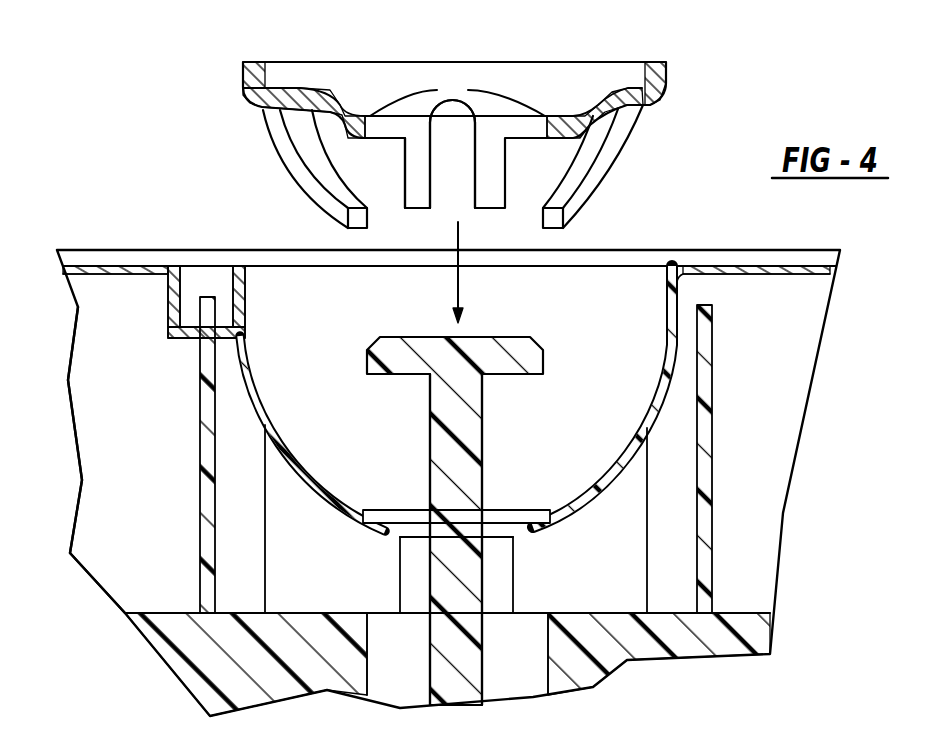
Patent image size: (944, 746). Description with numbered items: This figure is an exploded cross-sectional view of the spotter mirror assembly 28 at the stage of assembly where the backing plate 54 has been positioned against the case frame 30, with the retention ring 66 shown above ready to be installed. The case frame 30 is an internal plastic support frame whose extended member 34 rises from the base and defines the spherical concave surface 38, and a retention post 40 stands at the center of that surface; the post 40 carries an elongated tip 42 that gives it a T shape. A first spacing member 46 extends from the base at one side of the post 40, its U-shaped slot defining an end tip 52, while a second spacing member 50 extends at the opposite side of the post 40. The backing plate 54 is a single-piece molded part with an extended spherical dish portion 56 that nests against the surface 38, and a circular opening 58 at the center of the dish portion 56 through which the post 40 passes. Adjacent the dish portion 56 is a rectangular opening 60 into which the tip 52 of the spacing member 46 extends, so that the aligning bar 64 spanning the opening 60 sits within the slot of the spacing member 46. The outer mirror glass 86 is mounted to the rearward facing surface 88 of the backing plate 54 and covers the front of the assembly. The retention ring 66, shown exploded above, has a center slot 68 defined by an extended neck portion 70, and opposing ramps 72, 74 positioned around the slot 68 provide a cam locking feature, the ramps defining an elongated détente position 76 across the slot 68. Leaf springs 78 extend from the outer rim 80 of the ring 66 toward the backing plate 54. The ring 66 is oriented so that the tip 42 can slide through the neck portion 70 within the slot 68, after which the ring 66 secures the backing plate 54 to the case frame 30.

The spotter mirror assembly 28 is at (690, 45).
The case frame 30 is at (695, 665).
The extended member 34 is at (350, 577).
The spherical concave surface 38 is at (318, 490).
The retention post 40 is at (486, 485).
The elongated tip 42 is at (517, 347).
The first spacing member 46 is at (203, 542).
The second spacing member 50 is at (707, 480).
The end tip 52 is at (210, 303).
The backing plate 54 is at (788, 280).
The spherical dish portion 56 is at (607, 465).
The circular opening 58 is at (493, 520).
The rectangular opening 60 is at (187, 288).
The aligning bar 64 is at (190, 330).
The retention ring 66 is at (672, 86).
The center slot 68 is at (430, 153).
The extended neck portion 70 is at (413, 173).
The ramp 72 is at (413, 108).
The ramp 74 is at (503, 100).
The elongated détente position 76 is at (447, 100).
The leaf spring 78 is at (590, 193).
The outer rim 80 is at (242, 90).
The outer mirror glass 86 is at (193, 262).
The rearward facing surface 88 is at (104, 272).